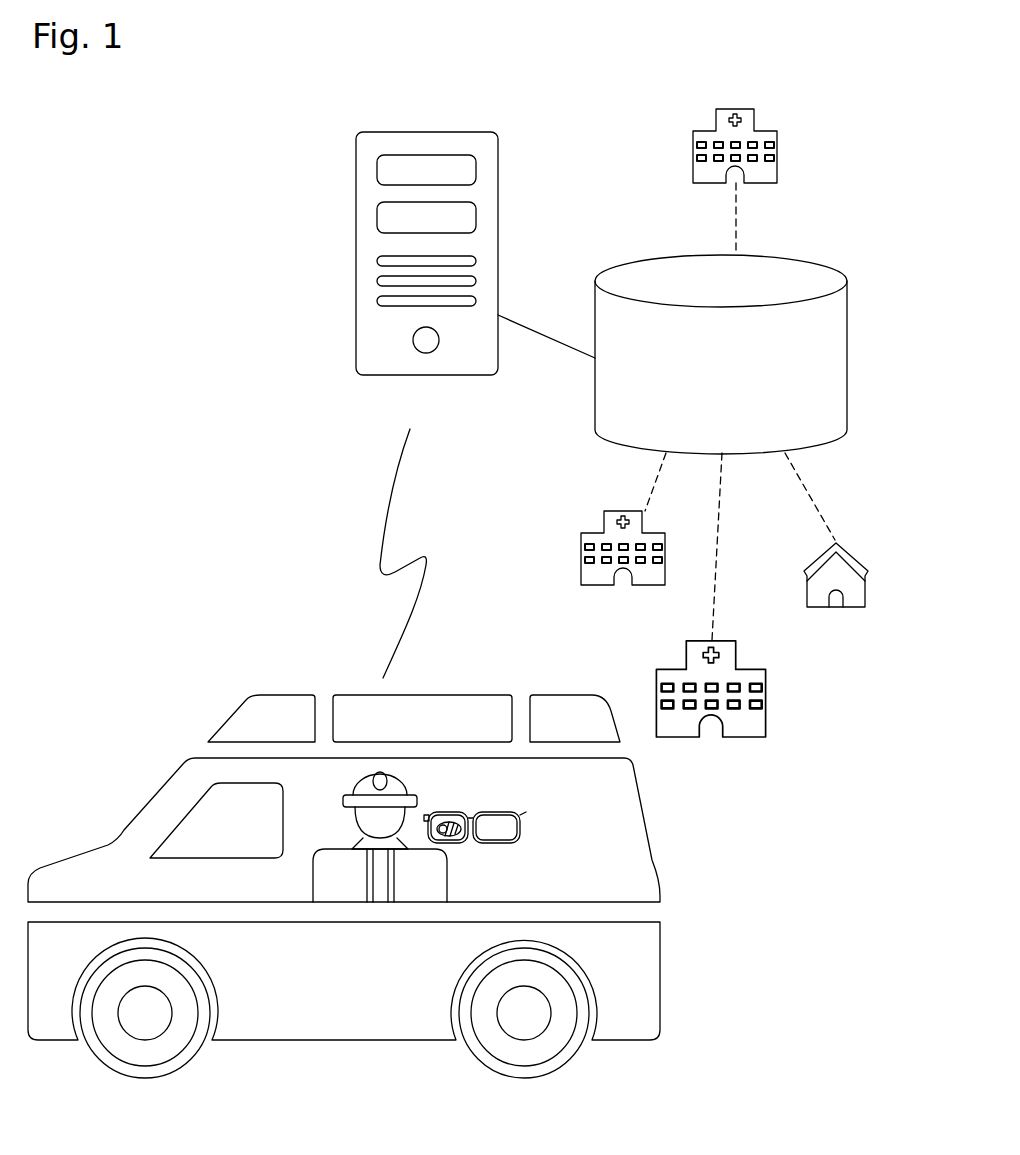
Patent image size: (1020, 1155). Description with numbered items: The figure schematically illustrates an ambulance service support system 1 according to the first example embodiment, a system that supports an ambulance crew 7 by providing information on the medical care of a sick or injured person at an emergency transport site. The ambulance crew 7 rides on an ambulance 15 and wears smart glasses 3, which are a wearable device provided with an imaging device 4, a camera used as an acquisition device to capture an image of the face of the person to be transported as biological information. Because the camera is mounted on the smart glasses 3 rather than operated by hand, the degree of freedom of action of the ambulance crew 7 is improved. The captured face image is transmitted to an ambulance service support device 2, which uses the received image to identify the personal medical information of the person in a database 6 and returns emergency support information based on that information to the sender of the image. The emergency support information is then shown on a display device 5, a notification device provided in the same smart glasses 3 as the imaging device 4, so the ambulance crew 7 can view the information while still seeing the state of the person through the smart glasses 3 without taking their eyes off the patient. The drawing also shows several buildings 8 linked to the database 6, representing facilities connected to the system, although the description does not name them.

The ambulance service support system 1 is at (236, 306).
The ambulance service support device 2 is at (437, 132).
The smart glasses 3 is at (519, 814).
The imaging device 4 is at (430, 812).
The display device 5 is at (490, 823).
The database 6 is at (808, 257).
The ambulance crew 7 is at (333, 848).
The medical facility 8 is at (693, 156).
The ambulance 15 is at (650, 833).